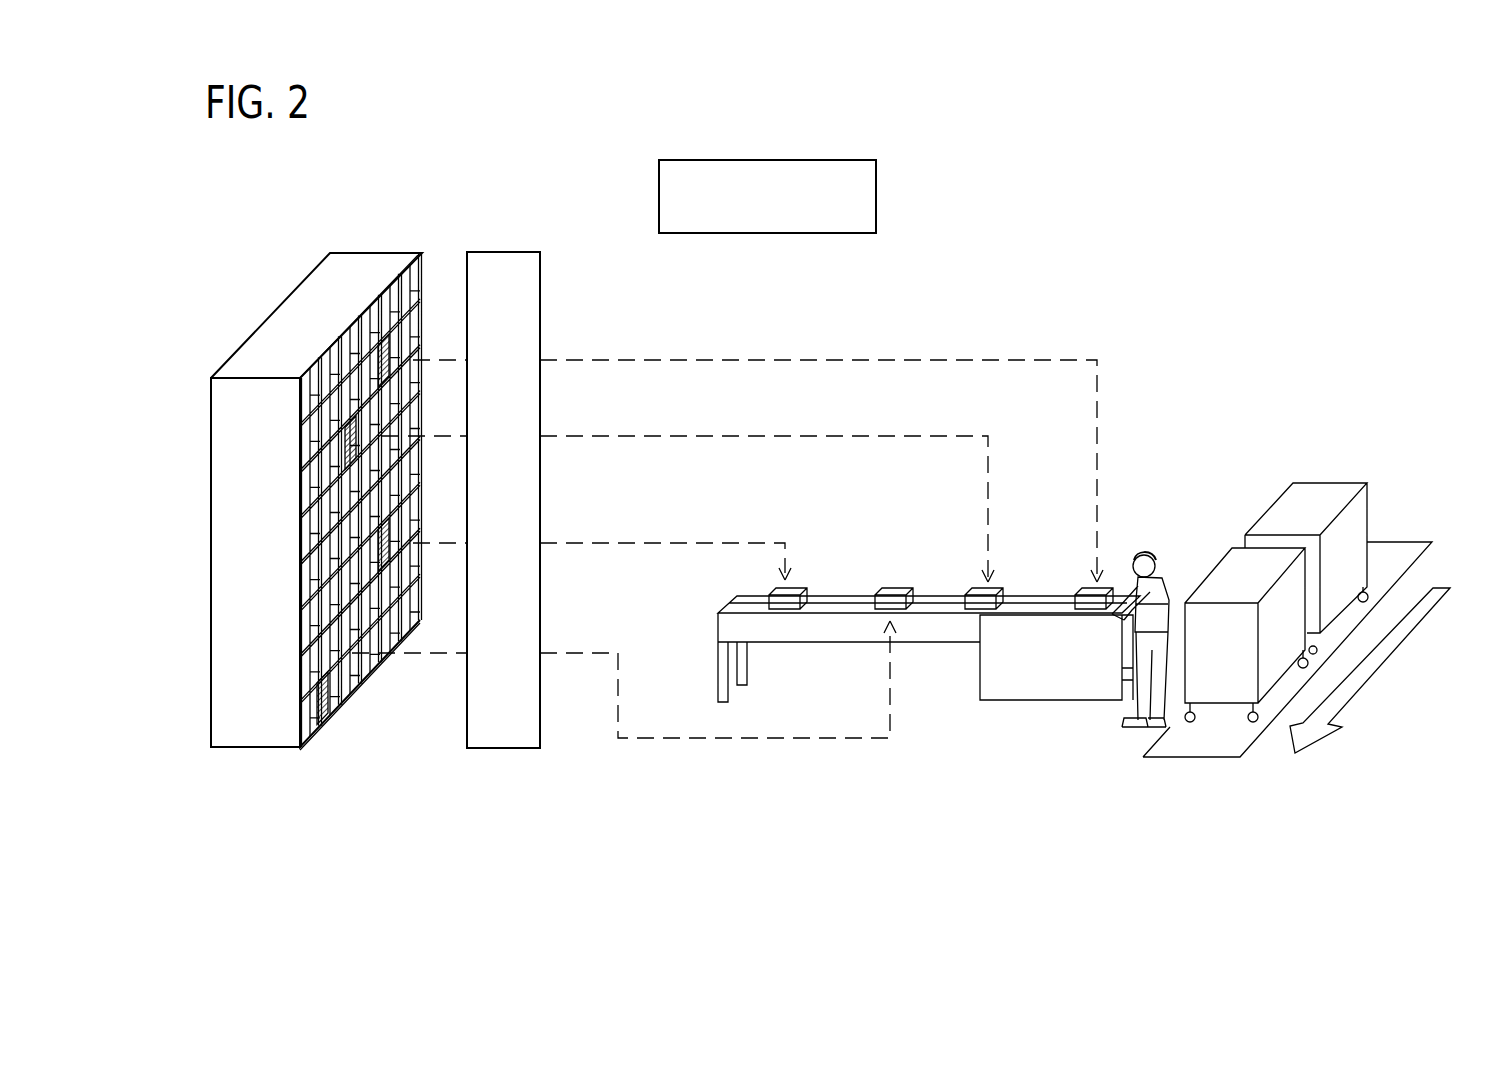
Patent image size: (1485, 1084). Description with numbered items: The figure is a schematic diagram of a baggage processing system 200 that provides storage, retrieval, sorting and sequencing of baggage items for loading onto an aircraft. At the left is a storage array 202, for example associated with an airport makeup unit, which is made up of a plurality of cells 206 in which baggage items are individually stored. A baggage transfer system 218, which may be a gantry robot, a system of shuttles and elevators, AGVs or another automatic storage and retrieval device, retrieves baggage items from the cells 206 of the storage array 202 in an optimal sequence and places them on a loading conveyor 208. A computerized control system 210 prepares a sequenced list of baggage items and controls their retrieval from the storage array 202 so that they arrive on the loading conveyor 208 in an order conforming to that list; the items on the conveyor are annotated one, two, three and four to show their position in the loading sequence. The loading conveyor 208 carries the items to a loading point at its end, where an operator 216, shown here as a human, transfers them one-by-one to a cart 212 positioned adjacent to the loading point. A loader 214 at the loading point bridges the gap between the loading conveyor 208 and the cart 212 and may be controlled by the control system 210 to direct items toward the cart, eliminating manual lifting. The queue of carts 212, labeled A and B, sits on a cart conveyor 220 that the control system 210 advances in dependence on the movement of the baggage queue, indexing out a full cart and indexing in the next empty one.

The baggage processing system 200 is at (1082, 133).
The storage array 202 is at (197, 490).
The cell 206 is at (413, 280).
The loading conveyor 208 is at (849, 575).
The control system 210 is at (877, 194).
The cart 212 is at (1226, 585).
The loader 214 is at (1032, 688).
The operator 216 is at (1158, 590).
The baggage transfer system 218 is at (540, 297).
The cart conveyor 220 is at (1397, 552).